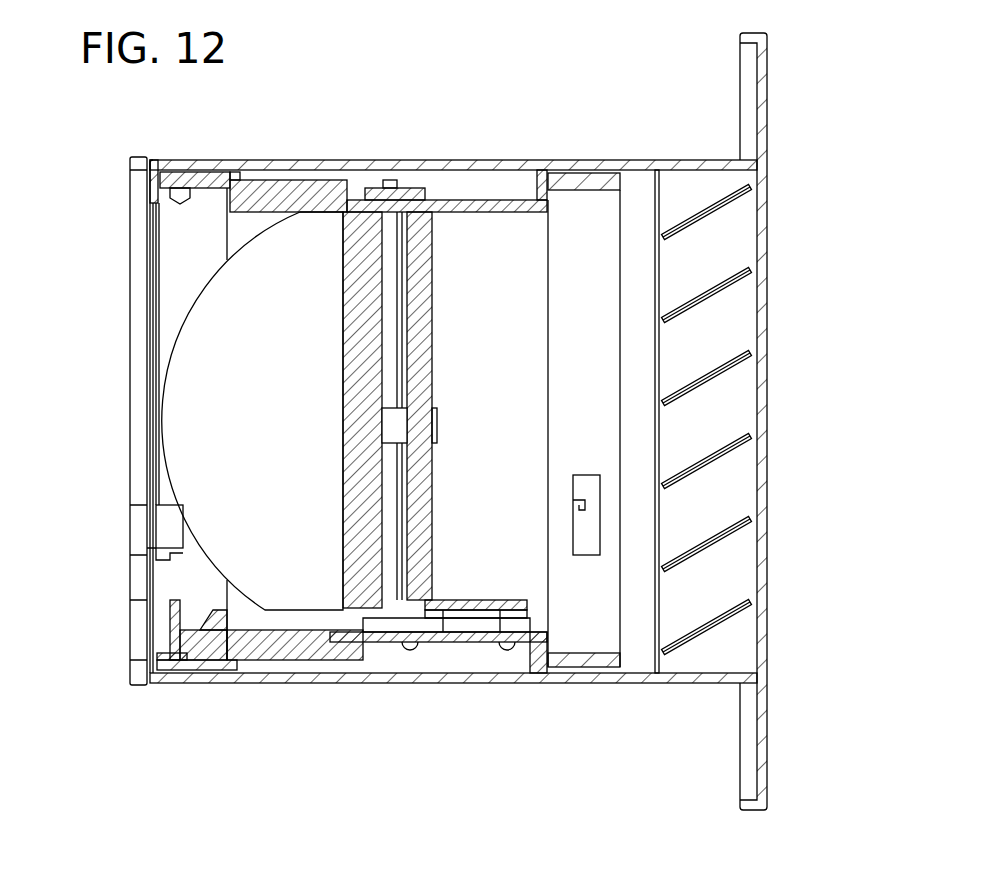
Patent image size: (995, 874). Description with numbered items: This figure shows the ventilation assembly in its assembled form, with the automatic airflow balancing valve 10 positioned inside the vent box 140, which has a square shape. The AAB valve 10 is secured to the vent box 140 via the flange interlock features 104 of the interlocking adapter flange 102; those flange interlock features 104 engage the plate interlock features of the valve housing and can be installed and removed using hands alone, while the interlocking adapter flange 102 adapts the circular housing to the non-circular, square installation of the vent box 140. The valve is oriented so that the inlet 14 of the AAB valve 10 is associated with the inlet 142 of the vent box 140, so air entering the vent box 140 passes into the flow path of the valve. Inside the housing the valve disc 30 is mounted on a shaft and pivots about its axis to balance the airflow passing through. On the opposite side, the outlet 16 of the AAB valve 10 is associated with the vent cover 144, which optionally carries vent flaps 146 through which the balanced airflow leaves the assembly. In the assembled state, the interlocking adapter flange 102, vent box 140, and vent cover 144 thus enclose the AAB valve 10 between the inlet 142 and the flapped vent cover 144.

The automatic airflow balancing valve 10 is at (453, 402).
The inlet 14 is at (107, 381).
The inlet of the vent box 142 is at (160, 283).
The outlet 16 is at (622, 218).
The valve disc 30 is at (261, 418).
The interlocking adapter flange 102 is at (130, 622).
The flange interlock features 104 is at (175, 190).
The vent box 140 is at (335, 160).
The vent cover 144 is at (767, 86).
The vent flaps 146 is at (716, 293).